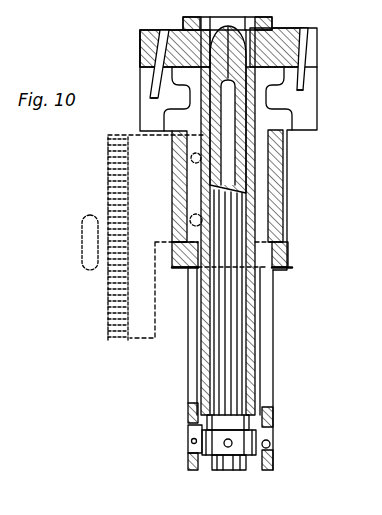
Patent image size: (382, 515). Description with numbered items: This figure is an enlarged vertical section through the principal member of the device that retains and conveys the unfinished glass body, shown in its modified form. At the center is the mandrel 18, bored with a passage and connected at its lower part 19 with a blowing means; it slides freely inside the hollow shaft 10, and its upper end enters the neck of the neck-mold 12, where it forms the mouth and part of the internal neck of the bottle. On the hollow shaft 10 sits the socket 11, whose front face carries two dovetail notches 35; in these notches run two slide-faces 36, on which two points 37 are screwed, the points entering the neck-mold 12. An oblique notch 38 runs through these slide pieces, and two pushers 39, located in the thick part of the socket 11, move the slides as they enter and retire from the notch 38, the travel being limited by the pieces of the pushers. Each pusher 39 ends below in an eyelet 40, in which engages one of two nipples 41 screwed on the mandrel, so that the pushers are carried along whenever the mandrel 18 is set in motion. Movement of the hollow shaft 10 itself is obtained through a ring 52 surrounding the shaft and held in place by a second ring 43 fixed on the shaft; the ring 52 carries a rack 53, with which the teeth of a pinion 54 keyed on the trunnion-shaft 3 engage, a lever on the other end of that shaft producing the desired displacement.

The trunnion-shaft 3 is at (85, 232).
The hollow shaft 10 is at (202, 385).
The socket 11 is at (290, 129).
The neck-mold 12 is at (275, 24).
The mandrel 18 is at (242, 378).
The lower part of the mandrel 19 is at (231, 471).
The dovetail notches 35 is at (150, 121).
The slide-faces 36 is at (162, 50).
The points 37 is at (165, 31).
The oblique notch 38 is at (312, 35).
The pushers 39 is at (158, 73).
The eyelet 40 is at (275, 432).
The nipples 41 is at (275, 447).
The second ring 43 is at (280, 272).
The ring 52 is at (287, 210).
The rack 53 is at (115, 337).
The pinion 54 is at (103, 287).